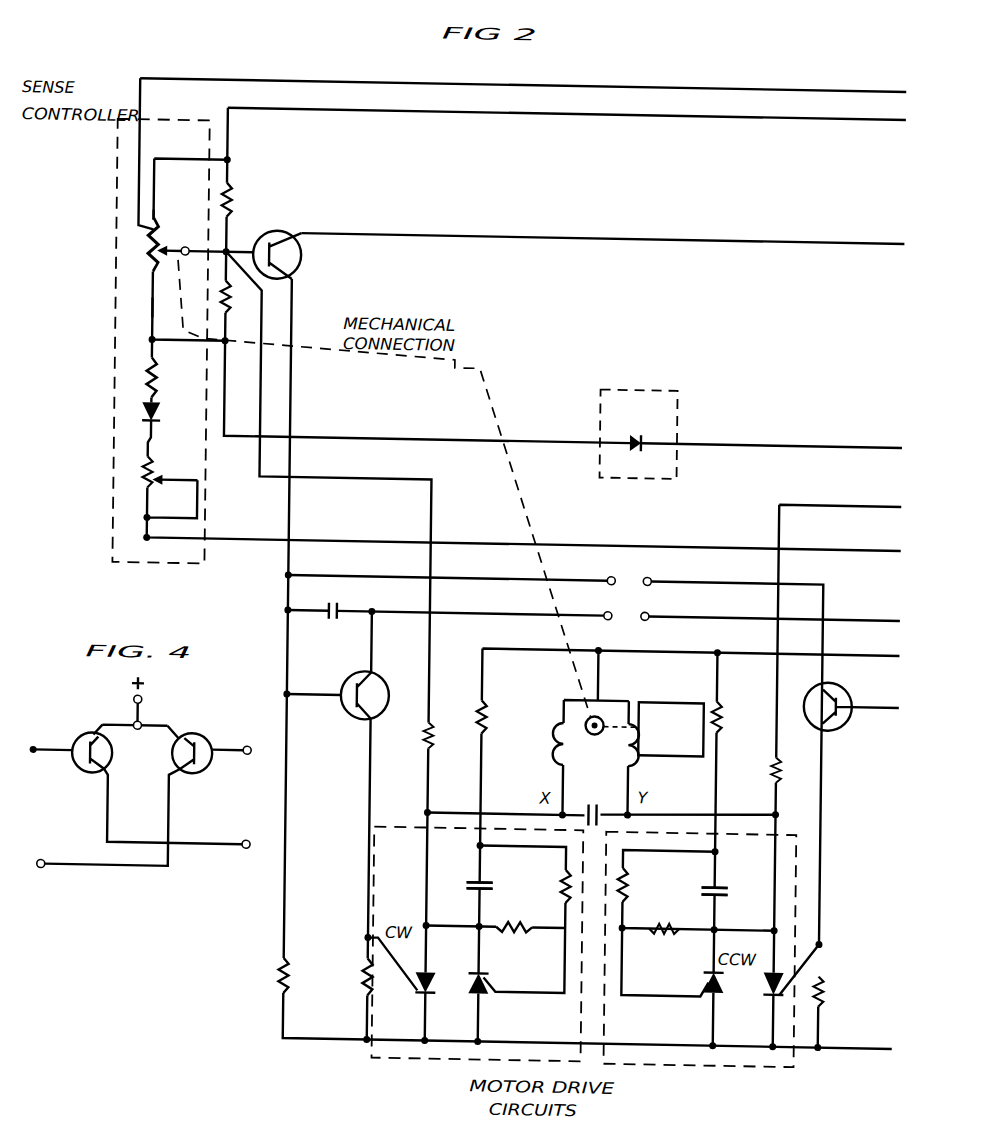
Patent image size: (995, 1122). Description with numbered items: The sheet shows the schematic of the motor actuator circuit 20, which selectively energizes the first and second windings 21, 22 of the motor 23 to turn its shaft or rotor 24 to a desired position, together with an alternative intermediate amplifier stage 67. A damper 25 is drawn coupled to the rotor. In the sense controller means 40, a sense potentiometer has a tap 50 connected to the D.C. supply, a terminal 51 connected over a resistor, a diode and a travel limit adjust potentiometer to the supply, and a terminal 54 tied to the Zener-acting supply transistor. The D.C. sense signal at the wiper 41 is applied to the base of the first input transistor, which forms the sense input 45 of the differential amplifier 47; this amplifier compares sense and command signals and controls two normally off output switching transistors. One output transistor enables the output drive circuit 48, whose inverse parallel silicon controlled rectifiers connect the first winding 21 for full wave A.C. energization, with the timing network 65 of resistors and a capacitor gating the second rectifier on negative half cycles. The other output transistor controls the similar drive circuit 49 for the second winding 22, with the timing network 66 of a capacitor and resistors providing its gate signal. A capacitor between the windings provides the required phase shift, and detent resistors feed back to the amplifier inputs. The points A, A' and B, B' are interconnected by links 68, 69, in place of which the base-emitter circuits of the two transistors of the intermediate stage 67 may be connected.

In FIG. 2, the motor actuator circuit 20 is at (815, 75).
In FIG. 2, the motor winding 21 is at (563, 749).
In FIG. 2, the motor winding 22 is at (621, 747).
In FIG. 2, the motor 23 is at (617, 744).
In FIG. 2, the rotor 24 is at (565, 700).
In FIG. 2, the damper 25 is at (712, 687).
In FIG. 2, the sense controller means 40 is at (114, 287).
In FIG. 2, the wiper 41 is at (175, 260).
In FIG. 2, the sense input 45 is at (238, 254).
In FIG. 2, the differential amplifier 47 is at (866, 197).
In FIG. 2, the output drive circuit 48 is at (477, 963).
In FIG. 2, the drive circuit 49 is at (699, 965).
In FIG. 2, the tap 50 is at (146, 231).
In FIG. 2, the terminal 51 is at (146, 315).
In FIG. 2, the terminal 54 is at (153, 222).
In FIG. 2, the timing network 65 is at (470, 868).
In FIG. 2, the timing network 66 is at (722, 907).
In FIG. 4, the intermediate amplifier stage 67 is at (141, 791).
In FIG. 2, the link 68 is at (629, 575).
In FIG. 2, the link 69 is at (628, 610).